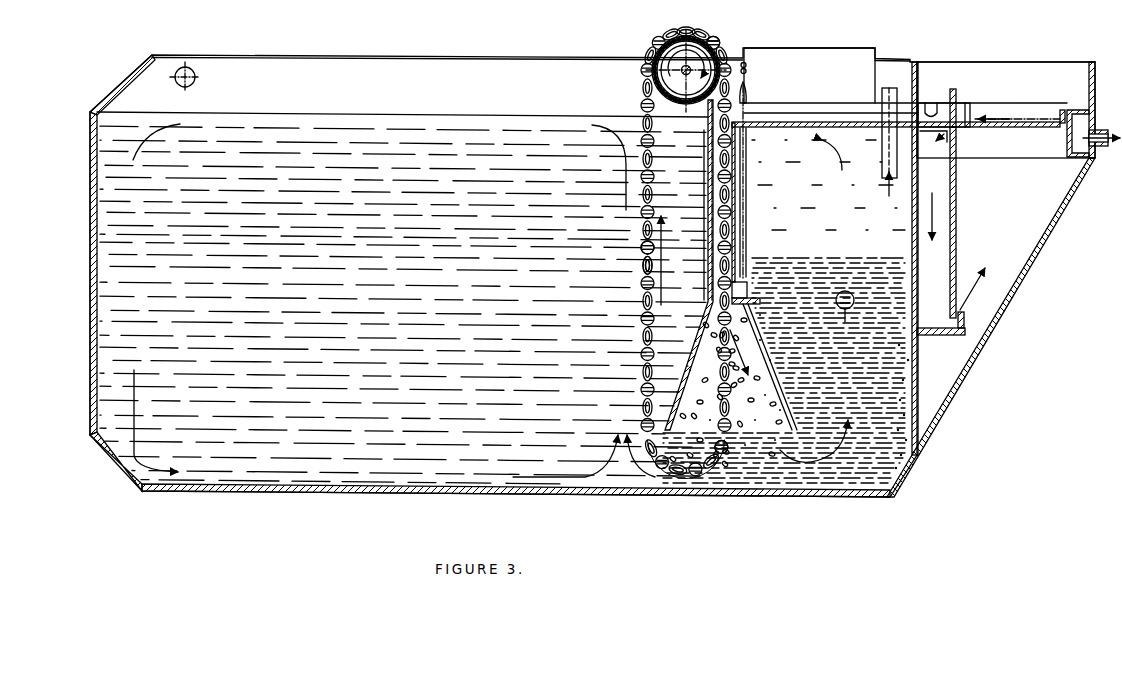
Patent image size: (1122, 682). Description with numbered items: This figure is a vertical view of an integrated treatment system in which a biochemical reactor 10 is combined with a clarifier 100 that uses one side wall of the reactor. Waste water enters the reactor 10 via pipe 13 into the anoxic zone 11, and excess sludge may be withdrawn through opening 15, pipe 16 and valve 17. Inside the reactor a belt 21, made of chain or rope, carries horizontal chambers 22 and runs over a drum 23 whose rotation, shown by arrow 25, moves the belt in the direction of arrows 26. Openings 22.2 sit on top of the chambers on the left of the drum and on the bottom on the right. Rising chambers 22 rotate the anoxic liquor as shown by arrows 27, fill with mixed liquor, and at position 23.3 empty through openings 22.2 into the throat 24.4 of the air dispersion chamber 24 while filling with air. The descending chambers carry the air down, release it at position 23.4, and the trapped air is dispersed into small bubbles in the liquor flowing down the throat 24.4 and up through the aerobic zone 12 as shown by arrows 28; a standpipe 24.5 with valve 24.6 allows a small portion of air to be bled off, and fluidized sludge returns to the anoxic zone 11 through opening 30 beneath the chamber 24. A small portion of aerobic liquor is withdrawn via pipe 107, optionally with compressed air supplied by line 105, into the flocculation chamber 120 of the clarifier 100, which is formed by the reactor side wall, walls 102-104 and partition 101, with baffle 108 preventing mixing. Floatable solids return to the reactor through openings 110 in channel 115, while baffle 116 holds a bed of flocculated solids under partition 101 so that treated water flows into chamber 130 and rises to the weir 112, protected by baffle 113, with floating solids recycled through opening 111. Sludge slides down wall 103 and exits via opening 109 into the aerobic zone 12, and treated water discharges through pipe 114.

The biochemical reactor 10 is at (390, 31).
The anoxic zone 11 is at (402, 298).
The aerobic zone 12 is at (784, 311).
The pipe 13 is at (197, 78).
The opening 15 is at (854, 300).
The pipe 16 is at (847, 292).
The valve 17 is at (851, 293).
The belt 21 is at (642, 299).
The horizontal chambers 22 is at (641, 256).
The openings 22.2 is at (641, 246).
The drum 23 is at (694, 48).
The position 23.3 is at (718, 44).
The position 23.4 is at (728, 453).
The air dispersion chamber 24 is at (758, 328).
The throat 24.4 is at (738, 161).
The standpipe 24.5 is at (749, 90).
The valve 24.6 is at (748, 68).
The arrow 25 is at (682, 74).
The arrows 26 is at (674, 260).
The arrows 27 is at (182, 124).
The arrows 28 is at (826, 301).
The opening 30 is at (700, 478).
The clarifier 100 is at (1014, 38).
The partition 101 is at (953, 88).
The walls 102-104 is at (1018, 62).
The wall 103 is at (1095, 82).
The line 105 is at (845, 47).
The pipe 107 is at (885, 180).
The baffle 108 is at (950, 142).
The opening 109 is at (905, 436).
The openings 110 is at (932, 100).
The opening 111 is at (970, 110).
The weir 112 is at (1066, 135).
The baffle 113 is at (1060, 113).
The pipe 114 is at (1114, 129).
The channel 115 is at (832, 102).
The baffle 116 is at (948, 338).
The flocculation chamber 120 is at (955, 214).
The chamber 130 is at (1003, 174).